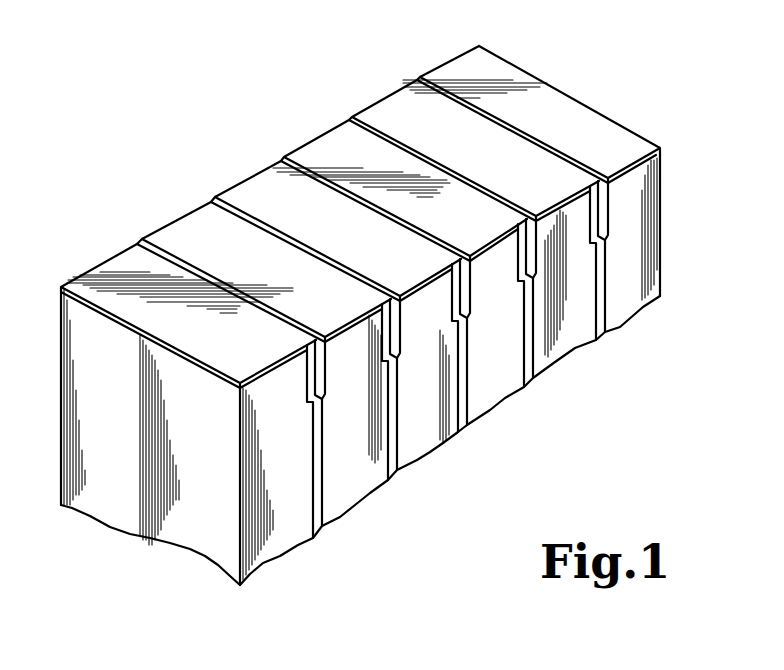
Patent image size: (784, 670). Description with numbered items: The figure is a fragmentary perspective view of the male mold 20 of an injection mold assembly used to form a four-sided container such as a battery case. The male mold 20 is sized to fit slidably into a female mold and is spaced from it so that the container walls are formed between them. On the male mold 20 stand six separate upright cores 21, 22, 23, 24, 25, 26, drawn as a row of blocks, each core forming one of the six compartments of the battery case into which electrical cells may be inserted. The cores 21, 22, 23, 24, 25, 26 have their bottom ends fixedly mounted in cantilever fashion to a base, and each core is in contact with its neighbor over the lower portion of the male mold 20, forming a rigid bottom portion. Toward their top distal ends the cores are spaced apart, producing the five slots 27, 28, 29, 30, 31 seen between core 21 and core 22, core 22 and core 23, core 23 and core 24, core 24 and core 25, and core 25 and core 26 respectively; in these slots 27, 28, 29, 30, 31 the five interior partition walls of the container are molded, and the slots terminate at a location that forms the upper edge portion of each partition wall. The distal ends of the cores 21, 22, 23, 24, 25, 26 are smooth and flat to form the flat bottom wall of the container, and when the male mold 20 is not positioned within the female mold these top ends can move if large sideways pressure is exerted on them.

The male mold 20 is at (404, 308).
The core 21 is at (103, 265).
The core 22 is at (185, 219).
The core 23 is at (255, 180).
The core 24 is at (313, 145).
The core 25 is at (385, 107).
The core 26 is at (457, 67).
The slot 27 is at (320, 522).
The slot 28 is at (395, 470).
The slot 29 is at (463, 427).
The slot 30 is at (531, 380).
The slot 31 is at (601, 334).